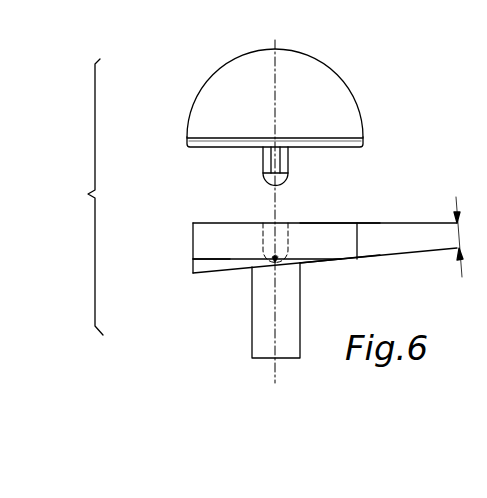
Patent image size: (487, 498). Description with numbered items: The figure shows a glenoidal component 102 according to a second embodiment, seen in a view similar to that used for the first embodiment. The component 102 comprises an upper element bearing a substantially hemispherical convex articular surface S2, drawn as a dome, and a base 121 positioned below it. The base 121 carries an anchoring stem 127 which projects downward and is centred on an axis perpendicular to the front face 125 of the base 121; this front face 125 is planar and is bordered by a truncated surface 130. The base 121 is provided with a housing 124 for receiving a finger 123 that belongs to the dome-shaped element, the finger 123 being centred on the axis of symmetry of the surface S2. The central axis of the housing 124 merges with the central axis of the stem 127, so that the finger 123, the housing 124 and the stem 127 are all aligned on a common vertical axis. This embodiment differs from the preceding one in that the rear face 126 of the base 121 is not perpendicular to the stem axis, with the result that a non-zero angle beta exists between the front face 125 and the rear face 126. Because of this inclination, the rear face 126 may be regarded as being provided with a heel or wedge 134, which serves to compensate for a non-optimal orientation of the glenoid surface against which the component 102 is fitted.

The glenoidal component 102 is at (79, 197).
The finger 123 is at (263, 164).
The housing 124 is at (284, 199).
The front face 125 is at (336, 222).
The base 121 is at (356, 242).
The rear face 126 is at (332, 263).
The truncated surface 130 is at (193, 241).
The wedge 134 is at (199, 265).
The anchoring stem 127 is at (263, 323).
The hemispherical convex articular surface S2 is at (333, 70).
The angle between front and rear faces beta is at (465, 237).